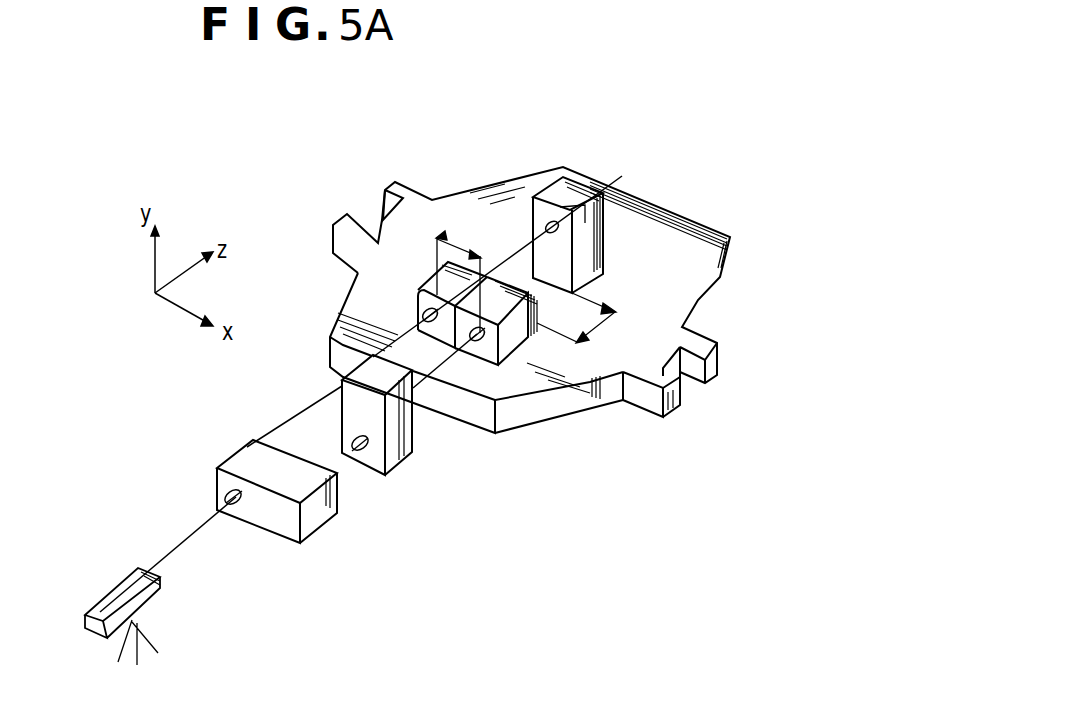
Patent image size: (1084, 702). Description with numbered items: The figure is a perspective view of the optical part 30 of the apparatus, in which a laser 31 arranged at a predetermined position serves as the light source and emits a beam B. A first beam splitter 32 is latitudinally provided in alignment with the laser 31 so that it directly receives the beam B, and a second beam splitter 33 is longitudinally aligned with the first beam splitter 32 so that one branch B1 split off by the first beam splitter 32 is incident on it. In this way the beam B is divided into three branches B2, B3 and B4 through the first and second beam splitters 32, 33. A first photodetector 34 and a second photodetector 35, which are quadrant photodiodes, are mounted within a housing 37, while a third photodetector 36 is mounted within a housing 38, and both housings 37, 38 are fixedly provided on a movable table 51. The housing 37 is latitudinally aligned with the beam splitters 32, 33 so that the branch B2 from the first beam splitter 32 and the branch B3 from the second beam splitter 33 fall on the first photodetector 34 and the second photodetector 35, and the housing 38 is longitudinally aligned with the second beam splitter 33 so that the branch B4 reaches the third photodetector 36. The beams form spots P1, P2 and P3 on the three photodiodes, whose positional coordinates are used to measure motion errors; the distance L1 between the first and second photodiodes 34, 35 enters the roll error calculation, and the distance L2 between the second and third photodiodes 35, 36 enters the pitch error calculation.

The optical part 30 is at (270, 367).
The laser 31 is at (112, 588).
The first beam splitter 32 is at (283, 533).
The second beam splitter 33 is at (387, 467).
The first photodetector 34 is at (428, 313).
The second photodetector 35 is at (485, 340).
The third photodetector 36 is at (563, 237).
The housing 37 is at (510, 348).
The housing 38 is at (593, 178).
The movable table 51 is at (673, 298).
The beam B is at (175, 547).
The branch B1 is at (352, 460).
The branch B2 is at (293, 424).
The branch B3 is at (440, 366).
The branch B4 is at (530, 252).
The beam spot P1 is at (423, 310).
The beam spot P2 is at (477, 345).
The beam spot P3 is at (550, 220).
The distance L1 is at (458, 274).
The distance L2 is at (577, 325).